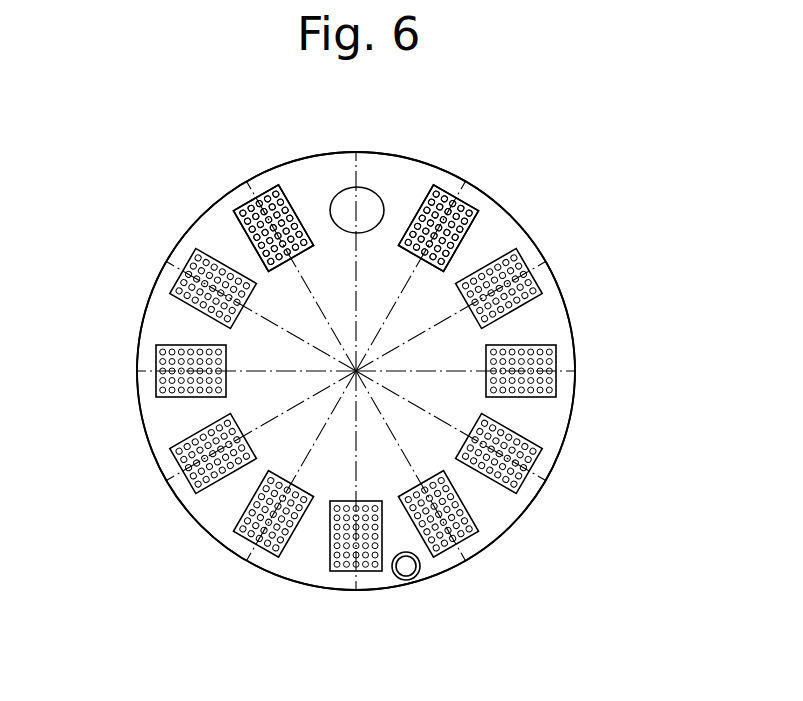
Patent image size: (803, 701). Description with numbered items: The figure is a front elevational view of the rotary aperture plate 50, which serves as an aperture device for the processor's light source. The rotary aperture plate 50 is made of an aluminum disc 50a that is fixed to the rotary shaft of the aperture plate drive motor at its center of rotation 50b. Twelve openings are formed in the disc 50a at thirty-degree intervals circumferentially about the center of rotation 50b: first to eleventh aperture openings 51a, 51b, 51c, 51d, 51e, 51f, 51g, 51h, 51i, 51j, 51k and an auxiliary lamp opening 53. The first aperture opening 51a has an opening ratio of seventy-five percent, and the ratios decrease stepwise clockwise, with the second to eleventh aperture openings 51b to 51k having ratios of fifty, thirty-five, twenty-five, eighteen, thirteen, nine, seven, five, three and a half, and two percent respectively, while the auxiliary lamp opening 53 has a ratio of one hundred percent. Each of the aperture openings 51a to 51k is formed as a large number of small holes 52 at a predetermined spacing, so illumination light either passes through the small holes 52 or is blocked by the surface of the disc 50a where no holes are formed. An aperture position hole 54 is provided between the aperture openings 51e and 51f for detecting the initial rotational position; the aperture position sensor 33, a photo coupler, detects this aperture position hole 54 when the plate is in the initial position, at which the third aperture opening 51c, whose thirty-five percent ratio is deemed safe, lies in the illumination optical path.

The rotary aperture plate 50 is at (585, 167).
The disc 50a is at (318, 152).
The center of rotation 50b is at (362, 366).
The first aperture opening 51a is at (452, 187).
The second aperture opening 51b is at (533, 257).
The third aperture opening 51c is at (558, 368).
The fourth aperture opening 51d is at (532, 463).
The fifth aperture opening 51e is at (455, 537).
The sixth aperture opening 51f is at (365, 572).
The seventh aperture opening 51g is at (247, 541).
The eighth aperture opening 51h is at (180, 468).
The ninth aperture opening 51i is at (157, 357).
The tenth aperture opening 51j is at (190, 262).
The eleventh aperture opening 51k is at (262, 193).
The small holes 52 is at (240, 216).
The auxiliary lamp opening 53 is at (357, 187).
The aperture position sensor 33 is at (405, 580).
The aperture position hole 54 is at (415, 578).